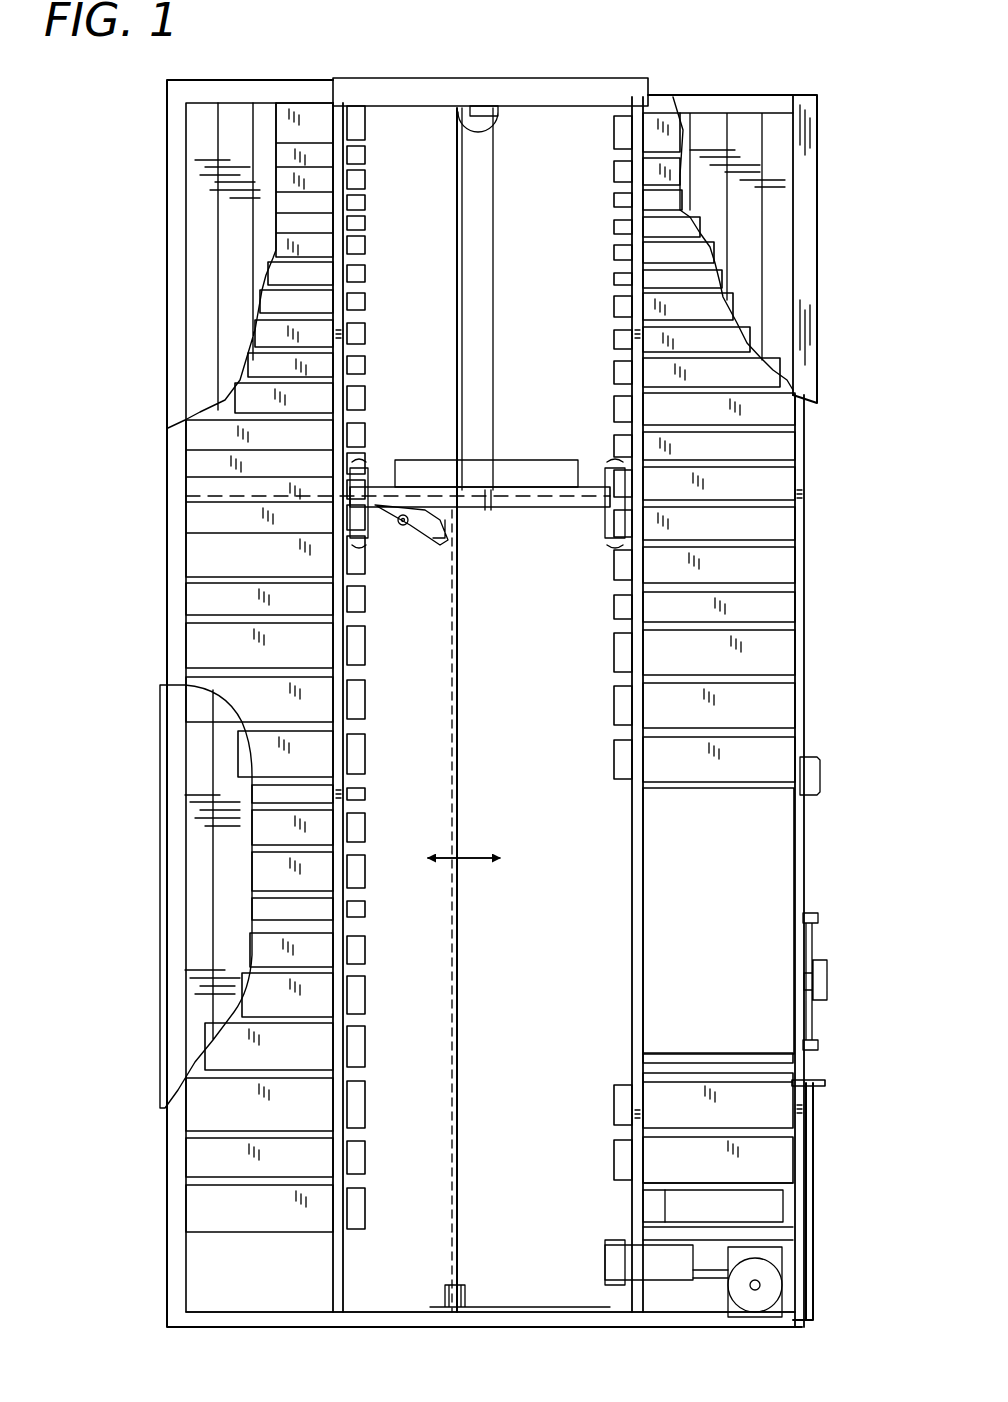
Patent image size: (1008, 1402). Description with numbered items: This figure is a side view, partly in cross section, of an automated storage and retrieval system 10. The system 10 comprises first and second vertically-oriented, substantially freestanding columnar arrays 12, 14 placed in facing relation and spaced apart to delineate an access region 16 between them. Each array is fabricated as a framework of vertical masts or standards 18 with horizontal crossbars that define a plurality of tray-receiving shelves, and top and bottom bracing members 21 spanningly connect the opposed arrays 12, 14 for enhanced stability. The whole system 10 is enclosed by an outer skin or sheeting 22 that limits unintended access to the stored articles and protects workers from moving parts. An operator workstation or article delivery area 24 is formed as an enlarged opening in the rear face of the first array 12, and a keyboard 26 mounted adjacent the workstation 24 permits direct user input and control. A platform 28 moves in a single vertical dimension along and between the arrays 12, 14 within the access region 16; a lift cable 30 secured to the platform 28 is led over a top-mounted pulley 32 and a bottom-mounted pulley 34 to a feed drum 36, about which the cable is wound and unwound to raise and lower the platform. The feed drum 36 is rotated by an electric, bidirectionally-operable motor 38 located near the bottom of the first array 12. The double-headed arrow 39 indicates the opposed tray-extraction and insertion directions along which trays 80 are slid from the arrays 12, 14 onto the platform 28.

The automated storage and retrieval system 10 is at (552, 62).
The first columnar array 12 is at (748, 88).
The second columnar array 14 is at (244, 80).
The access region 16 is at (522, 666).
The vertical masts or standards 18 is at (804, 505).
The top and bottom bracing members 21 is at (418, 78).
The outer skin or sheeting 22 is at (207, 134).
The operator workstation or article delivery area 24 is at (732, 938).
The keyboard 26 is at (826, 968).
The platform 28 is at (576, 525).
The lift cable 30 is at (455, 255).
The top-mounted pulley 32 is at (490, 118).
The bottom-mounted pulley 34 is at (455, 1292).
The feed drum 36 is at (757, 1258).
The electric bidirectionally-operable motor 38 is at (645, 1206).
The double-headed arrow 39 is at (467, 839).
The trays 80 is at (376, 300).